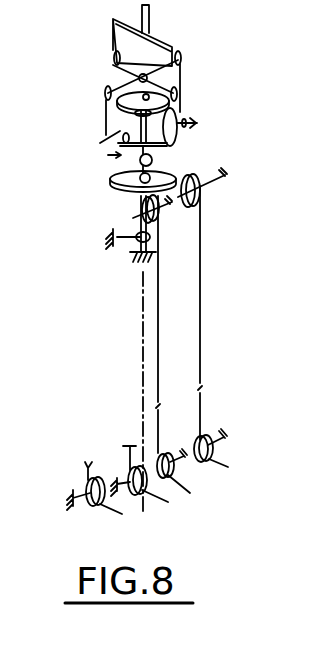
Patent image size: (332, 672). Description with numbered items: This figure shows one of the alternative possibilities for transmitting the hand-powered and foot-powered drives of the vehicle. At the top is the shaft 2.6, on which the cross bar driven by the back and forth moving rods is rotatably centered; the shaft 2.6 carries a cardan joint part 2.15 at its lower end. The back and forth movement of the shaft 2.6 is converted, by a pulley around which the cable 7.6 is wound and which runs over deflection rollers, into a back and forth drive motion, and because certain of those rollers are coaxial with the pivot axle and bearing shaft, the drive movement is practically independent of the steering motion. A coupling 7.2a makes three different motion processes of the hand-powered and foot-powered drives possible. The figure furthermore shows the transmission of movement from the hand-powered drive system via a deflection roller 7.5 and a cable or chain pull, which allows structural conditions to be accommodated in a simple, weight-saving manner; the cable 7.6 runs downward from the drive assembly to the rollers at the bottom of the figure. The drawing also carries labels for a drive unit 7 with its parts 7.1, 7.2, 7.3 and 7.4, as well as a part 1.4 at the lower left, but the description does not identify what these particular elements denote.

The shaft 2.6 is at (151, 34).
The cardan joint part 2.15 is at (112, 67).
The disc 7.1 is at (120, 88).
The rod 7.2 is at (181, 64).
The drive pinion 7.3 is at (174, 120).
The coupling 7.2a is at (140, 123).
The pin 7.4 is at (124, 133).
The drive unit 7 is at (130, 146).
The deflection roller 7.5 is at (173, 173).
The cable 7.6 is at (215, 243).
The pulley 1.4 is at (87, 470).